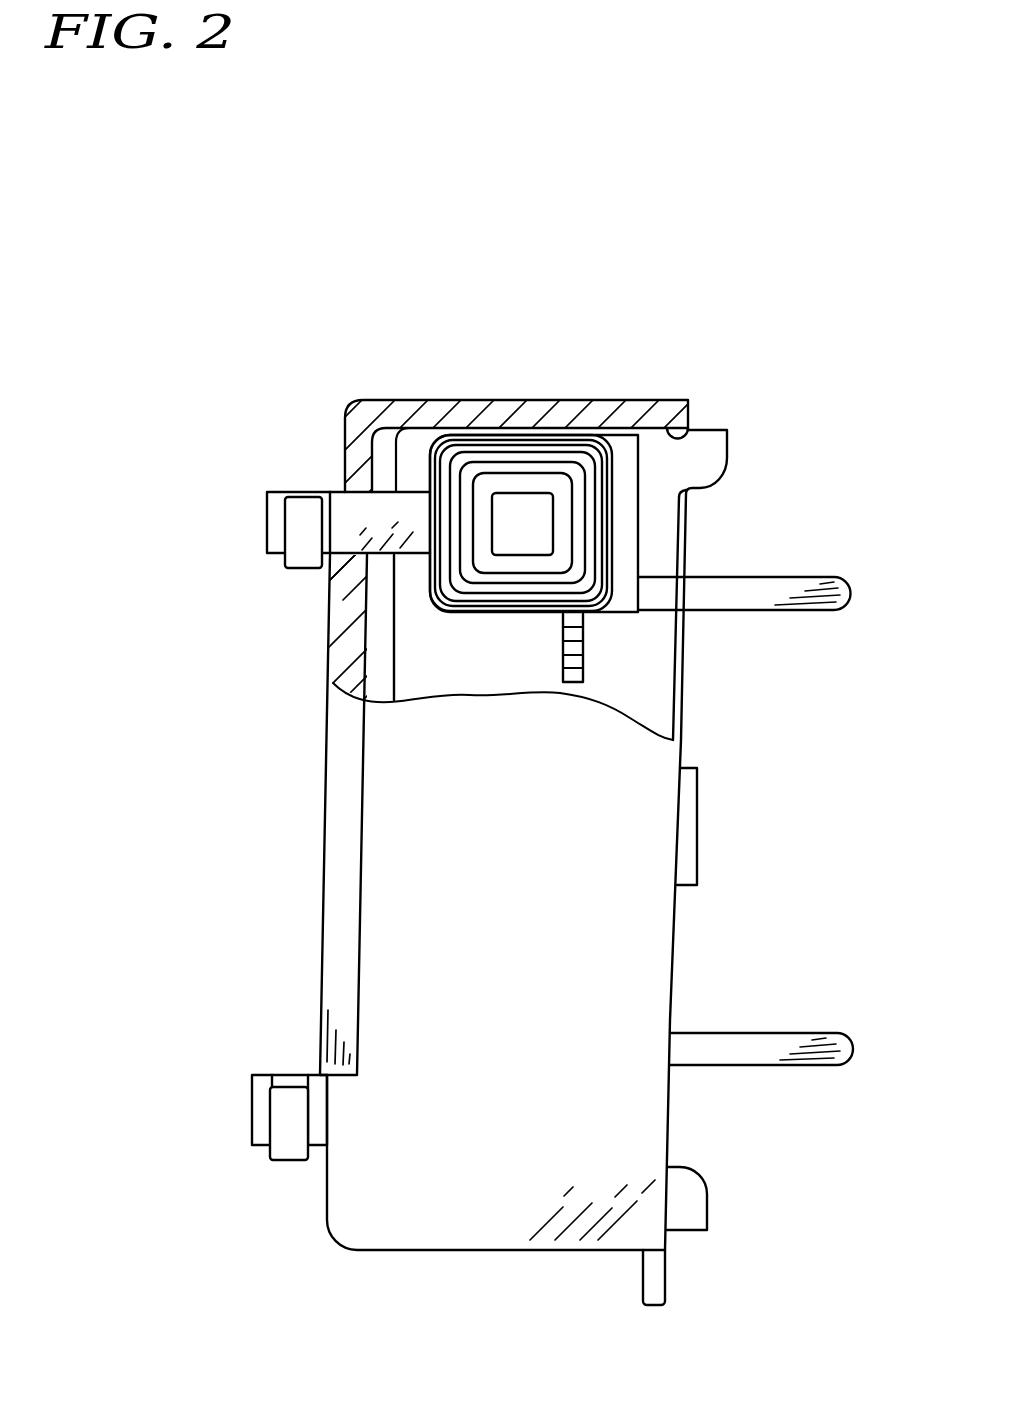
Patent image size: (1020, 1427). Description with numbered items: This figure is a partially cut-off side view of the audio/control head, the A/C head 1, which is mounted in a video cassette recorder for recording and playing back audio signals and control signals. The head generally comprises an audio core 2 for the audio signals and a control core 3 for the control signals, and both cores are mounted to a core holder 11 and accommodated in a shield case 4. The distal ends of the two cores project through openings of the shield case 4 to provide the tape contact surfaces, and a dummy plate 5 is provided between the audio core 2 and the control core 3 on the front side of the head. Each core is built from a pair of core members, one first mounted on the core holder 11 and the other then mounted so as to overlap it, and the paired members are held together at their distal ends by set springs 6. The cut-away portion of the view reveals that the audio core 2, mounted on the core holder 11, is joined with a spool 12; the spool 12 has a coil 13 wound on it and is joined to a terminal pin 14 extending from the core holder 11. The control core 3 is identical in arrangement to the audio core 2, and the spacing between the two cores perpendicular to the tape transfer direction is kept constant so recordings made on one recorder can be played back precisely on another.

The A/C head 1 is at (547, 337).
The audio core 2 is at (256, 515).
The control core 3 is at (241, 1091).
The shield case 4 is at (357, 412).
The dummy plate 5 is at (333, 683).
The set spring 6 is at (302, 553).
The core holder 11 is at (663, 492).
The spool 12 is at (645, 542).
The coil 13 is at (487, 455).
The terminal pin 14 is at (747, 597).